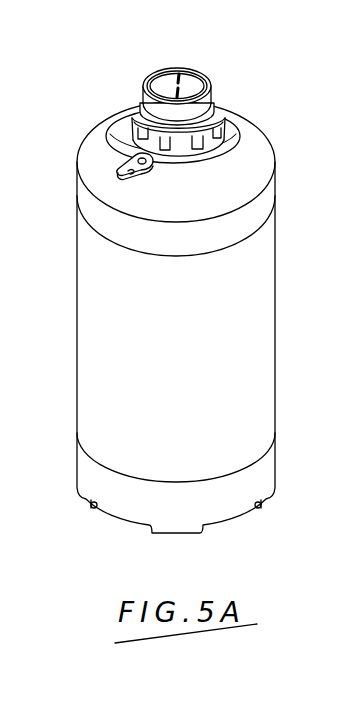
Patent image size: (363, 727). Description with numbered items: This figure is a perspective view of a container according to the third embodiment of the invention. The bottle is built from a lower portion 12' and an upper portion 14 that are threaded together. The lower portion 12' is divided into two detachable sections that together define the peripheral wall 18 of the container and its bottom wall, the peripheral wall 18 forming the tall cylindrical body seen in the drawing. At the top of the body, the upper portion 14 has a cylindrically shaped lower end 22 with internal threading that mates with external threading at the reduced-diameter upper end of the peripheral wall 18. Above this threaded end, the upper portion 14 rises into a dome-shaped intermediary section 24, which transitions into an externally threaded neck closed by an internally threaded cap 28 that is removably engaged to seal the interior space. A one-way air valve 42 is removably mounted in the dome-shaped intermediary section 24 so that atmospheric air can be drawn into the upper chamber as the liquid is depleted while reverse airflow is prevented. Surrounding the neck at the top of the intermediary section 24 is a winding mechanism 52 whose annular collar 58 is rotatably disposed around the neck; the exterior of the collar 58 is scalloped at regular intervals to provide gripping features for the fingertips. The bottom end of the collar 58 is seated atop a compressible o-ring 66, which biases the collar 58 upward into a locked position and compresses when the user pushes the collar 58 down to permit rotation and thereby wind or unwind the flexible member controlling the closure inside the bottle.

The lower portion 12' is at (195, 289).
The upper portion 14 is at (195, 123).
The peripheral wall 18 is at (268, 340).
The cylindrically shaped lower end 22 is at (268, 208).
The dome-shaped intermediary section 24 is at (112, 120).
The cap 28 is at (198, 81).
The one-way air valve 42 is at (123, 158).
The winding mechanism 52 is at (222, 155).
The annular collar 58 is at (181, 148).
The o-ring 66 is at (123, 128).